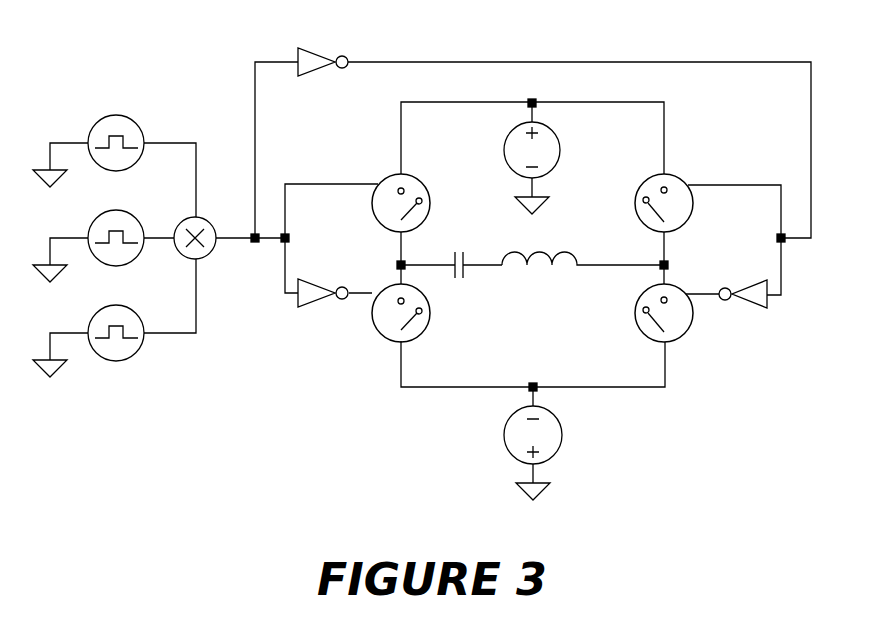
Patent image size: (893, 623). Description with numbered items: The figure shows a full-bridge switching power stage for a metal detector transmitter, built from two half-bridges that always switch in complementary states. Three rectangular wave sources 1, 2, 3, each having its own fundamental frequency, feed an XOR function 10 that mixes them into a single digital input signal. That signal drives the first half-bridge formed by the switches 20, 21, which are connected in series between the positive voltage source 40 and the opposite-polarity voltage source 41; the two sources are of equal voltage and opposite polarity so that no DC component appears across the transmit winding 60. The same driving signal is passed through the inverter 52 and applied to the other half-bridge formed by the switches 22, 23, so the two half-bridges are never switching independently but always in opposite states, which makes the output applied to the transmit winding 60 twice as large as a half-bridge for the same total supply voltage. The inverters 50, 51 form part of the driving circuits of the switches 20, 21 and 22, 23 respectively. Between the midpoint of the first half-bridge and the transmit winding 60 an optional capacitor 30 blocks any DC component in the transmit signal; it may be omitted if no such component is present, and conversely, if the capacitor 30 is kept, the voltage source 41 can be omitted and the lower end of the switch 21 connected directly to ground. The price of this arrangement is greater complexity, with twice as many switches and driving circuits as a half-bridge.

The rectangular wave source 1 is at (114, 154).
The rectangular wave source 2 is at (103, 234).
The rectangular wave source 3 is at (114, 318).
The XOR function 10 is at (229, 231).
The switch 20 is at (474, 183).
The switch 21 is at (518, 326).
The switch 22 is at (656, 219).
The switch 23 is at (656, 311).
The capacitor 30 is at (451, 277).
The voltage source 40 is at (545, 158).
The voltage source 41 is at (545, 443).
The inverter 50 is at (328, 272).
The inverter 51 is at (733, 246).
The inverter 52 is at (533, 132).
The transmit winding 60 is at (583, 247).